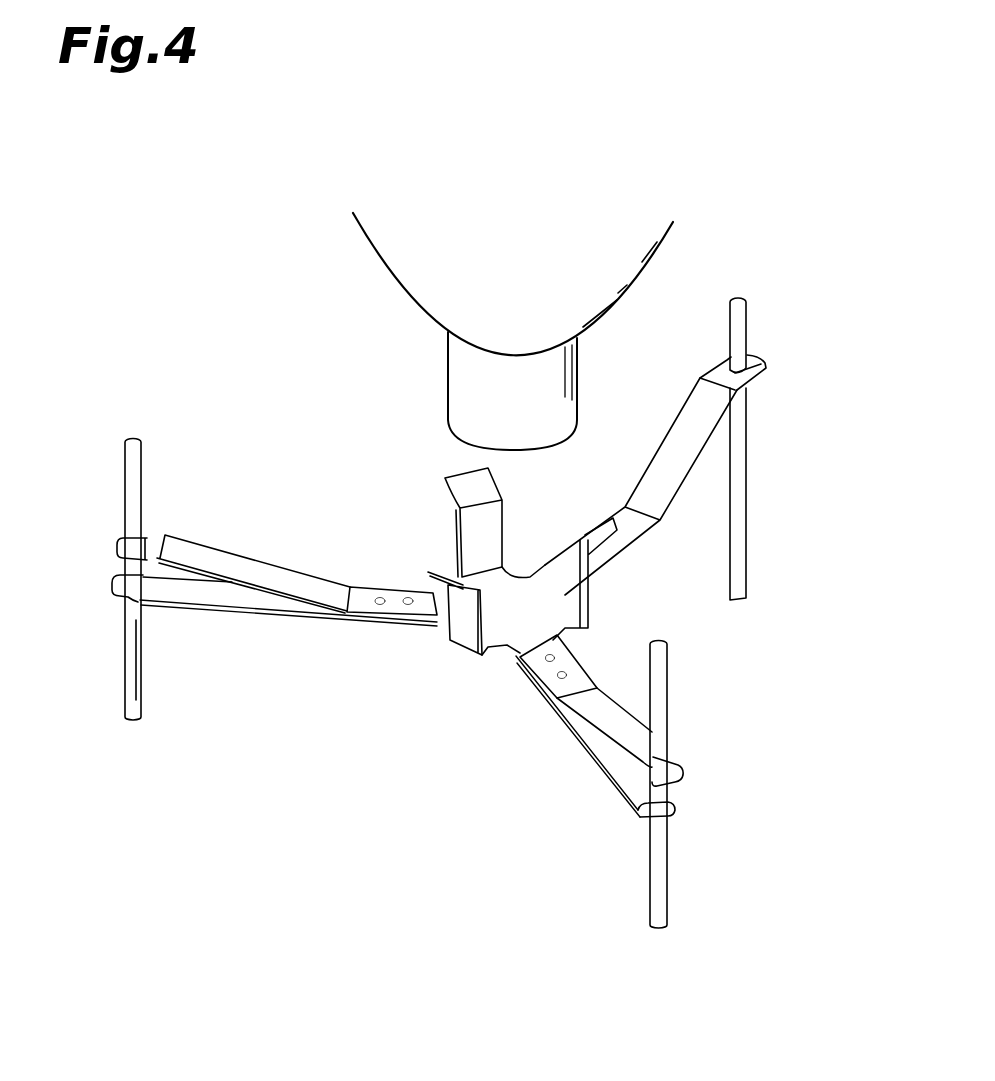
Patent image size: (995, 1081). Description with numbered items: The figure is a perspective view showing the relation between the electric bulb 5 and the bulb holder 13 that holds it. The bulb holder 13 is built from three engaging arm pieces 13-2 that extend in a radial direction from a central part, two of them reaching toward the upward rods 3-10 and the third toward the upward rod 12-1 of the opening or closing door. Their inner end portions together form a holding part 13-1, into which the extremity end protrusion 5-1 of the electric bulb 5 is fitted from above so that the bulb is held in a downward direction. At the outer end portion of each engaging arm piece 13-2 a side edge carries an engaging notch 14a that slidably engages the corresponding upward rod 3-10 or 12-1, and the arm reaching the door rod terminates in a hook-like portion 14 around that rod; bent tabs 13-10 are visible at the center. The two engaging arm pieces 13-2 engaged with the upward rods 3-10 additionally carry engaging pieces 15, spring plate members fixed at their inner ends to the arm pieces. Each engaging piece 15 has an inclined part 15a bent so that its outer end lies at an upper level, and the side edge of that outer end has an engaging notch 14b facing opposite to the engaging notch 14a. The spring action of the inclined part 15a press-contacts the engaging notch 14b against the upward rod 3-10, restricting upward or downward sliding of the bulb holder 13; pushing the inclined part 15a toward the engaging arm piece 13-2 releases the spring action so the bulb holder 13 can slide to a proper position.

The electric bulb 5 is at (392, 235).
The extremity end protrusion 5-1 is at (460, 385).
The upward rod 12-1 is at (740, 322).
The hook portion 14 is at (760, 358).
The engaging arm piece 13-2 is at (670, 467).
The bent tab 13-10 is at (462, 470).
The holding part 13-1 is at (511, 620).
The inclined part 15a is at (598, 710).
The engaging piece 15 is at (220, 548).
The engaging notch 14b is at (130, 538).
The engaging notch 14a is at (118, 598).
The upward rod 3-10 is at (133, 665).
The bulb holder 13 is at (423, 693).